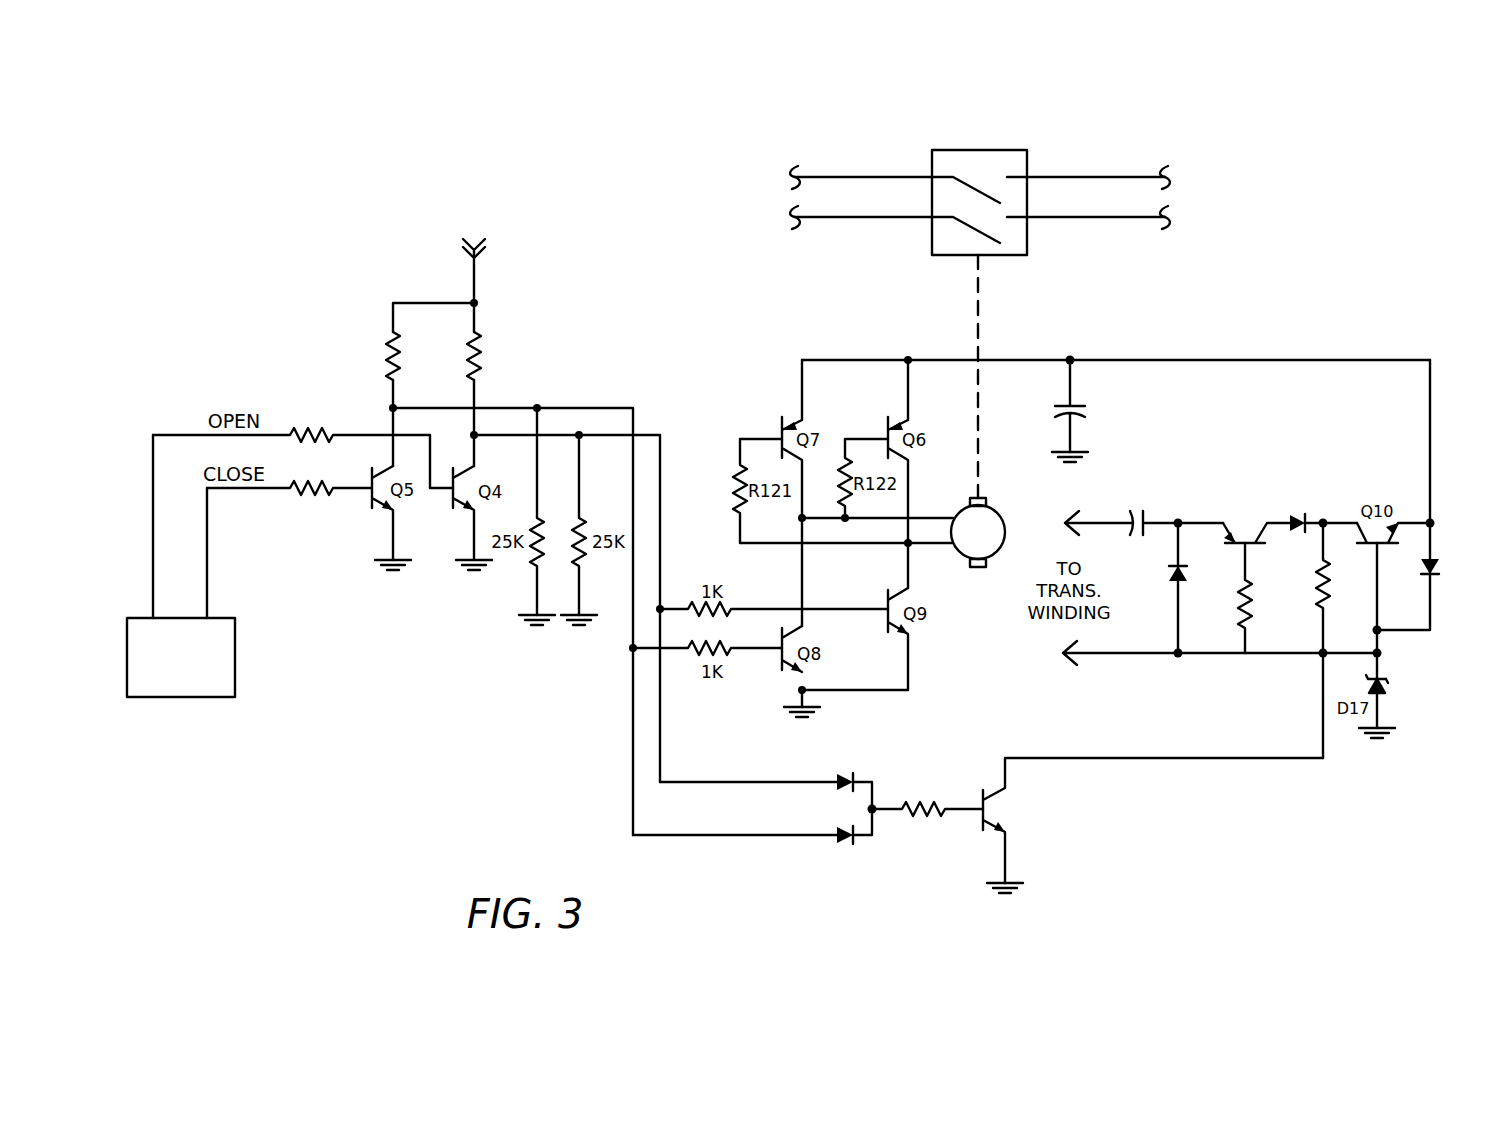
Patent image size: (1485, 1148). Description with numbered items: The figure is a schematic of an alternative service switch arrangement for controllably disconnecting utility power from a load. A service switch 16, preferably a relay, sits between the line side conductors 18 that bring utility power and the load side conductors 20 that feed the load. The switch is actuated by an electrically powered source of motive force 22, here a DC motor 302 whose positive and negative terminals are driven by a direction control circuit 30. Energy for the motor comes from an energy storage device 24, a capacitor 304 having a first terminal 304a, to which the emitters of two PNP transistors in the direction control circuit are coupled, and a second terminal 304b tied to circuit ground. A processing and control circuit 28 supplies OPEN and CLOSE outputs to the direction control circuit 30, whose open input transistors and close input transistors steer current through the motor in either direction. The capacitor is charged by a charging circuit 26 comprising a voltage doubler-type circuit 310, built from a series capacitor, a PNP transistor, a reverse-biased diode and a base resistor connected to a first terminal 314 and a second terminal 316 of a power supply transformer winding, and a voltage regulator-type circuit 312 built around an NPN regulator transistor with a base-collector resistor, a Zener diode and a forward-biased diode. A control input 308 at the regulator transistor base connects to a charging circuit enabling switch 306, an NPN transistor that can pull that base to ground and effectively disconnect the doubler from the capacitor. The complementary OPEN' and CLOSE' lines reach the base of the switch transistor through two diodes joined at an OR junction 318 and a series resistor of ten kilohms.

The service switch 16 is at (1028, 160).
The line side conductors 18 is at (858, 168).
The load side conductors 20 is at (1130, 176).
The electrically powered source of motive force 22 is at (1020, 514).
The energy storage device 24 is at (1058, 340).
The charging circuit 26 is at (1288, 470).
The processing and control circuit 28 is at (235, 657).
The direction control circuit 30 is at (670, 342).
The DC motor 302 is at (978, 568).
The capacitor 304 is at (1078, 405).
The first terminal 304a is at (1078, 352).
The second terminal 304b is at (1072, 427).
The charging circuit enabling switch 306 is at (986, 816).
The control input 308 is at (1320, 655).
The voltage doubler-type circuit 310 is at (1190, 494).
The voltage regulator-type circuit 312 is at (1425, 650).
The first terminal of the transformer winding 314 is at (1080, 512).
The second terminal of the transformer winding 316 is at (1072, 664).
The OR junction 318 is at (875, 806).